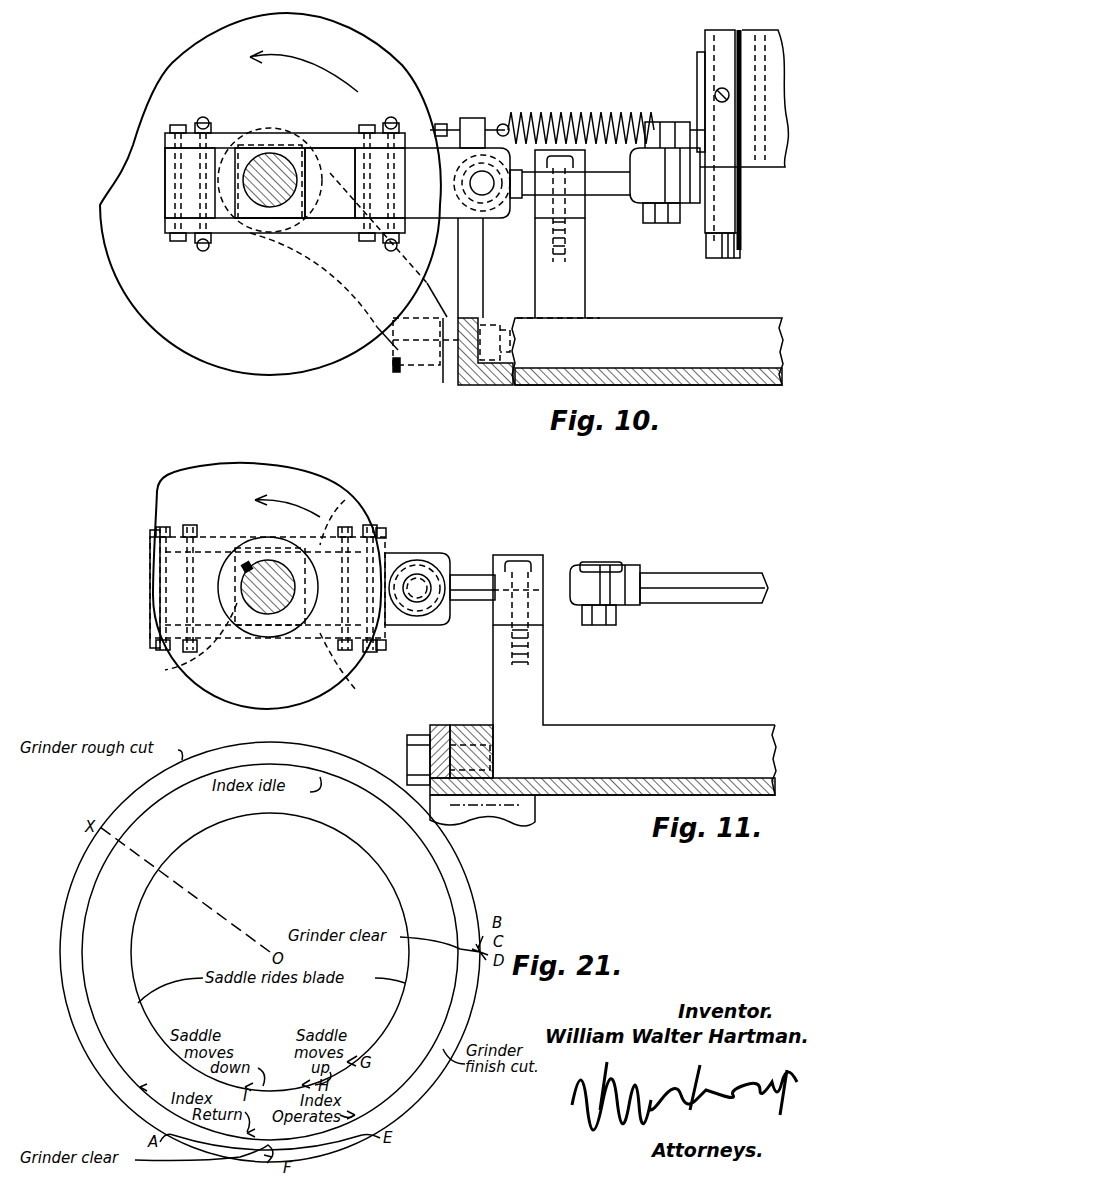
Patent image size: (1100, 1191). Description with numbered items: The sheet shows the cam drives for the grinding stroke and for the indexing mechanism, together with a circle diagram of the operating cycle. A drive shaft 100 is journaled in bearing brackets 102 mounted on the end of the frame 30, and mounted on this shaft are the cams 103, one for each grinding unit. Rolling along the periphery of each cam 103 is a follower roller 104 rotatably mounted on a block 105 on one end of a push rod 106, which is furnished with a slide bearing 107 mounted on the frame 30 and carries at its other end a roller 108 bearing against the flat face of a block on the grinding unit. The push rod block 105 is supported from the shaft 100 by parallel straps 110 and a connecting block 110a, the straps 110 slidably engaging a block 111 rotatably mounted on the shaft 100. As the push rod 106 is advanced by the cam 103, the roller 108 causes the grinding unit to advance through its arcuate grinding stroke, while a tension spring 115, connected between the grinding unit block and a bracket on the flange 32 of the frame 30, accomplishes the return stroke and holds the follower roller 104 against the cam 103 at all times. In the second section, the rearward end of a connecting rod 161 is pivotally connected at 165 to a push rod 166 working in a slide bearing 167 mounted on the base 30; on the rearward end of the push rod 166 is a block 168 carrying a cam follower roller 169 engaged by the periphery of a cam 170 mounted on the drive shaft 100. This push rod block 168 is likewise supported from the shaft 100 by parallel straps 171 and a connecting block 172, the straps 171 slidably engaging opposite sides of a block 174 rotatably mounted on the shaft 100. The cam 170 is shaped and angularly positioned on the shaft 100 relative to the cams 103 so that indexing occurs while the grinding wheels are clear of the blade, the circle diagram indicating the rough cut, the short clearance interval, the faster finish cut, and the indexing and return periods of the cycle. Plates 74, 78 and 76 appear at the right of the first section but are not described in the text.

In FIG. 10, the cam 103 is at (375, 43).
In FIG. 10, the parallel straps 110 is at (323, 140).
In FIG. 10, the drive shaft 100 is at (277, 158).
In FIG. 11, the drive shaft 100 is at (262, 600).
In FIG. 10, the connecting block 110a is at (165, 200).
In FIG. 10, the block 111 is at (247, 220).
In FIG. 10, the bearing brackets 102 is at (377, 351).
In FIG. 10, the flange 32 is at (470, 321).
In FIG. 11, the flange 32 is at (470, 728).
In FIG. 10, the push rod 106 is at (493, 208).
In FIG. 10, the follower roller 104 is at (482, 238).
In FIG. 10, the block 105 is at (470, 245).
In FIG. 10, the slide bearing 107 is at (572, 204).
In FIG. 10, the roller 108 is at (638, 226).
In FIG. 10, the tension spring 115 is at (566, 123).
In FIG. 10, the plate 74 is at (738, 216).
In FIG. 10, the plate 78 is at (771, 178).
In FIG. 10, the plate 76 is at (740, 230).
In FIG. 10, the frame 30 is at (728, 385).
In FIG. 11, the frame 30 is at (580, 785).
In FIG. 11, the cam 170 is at (319, 477).
In FIG. 11, the parallel straps 171 is at (347, 502).
In FIG. 11, the connecting block 172 is at (150, 615).
In FIG. 11, the block 174 is at (184, 665).
In FIG. 11, the block 168 is at (400, 555).
In FIG. 11, the cam follower roller 169 is at (417, 560).
In FIG. 11, the push rod 166 is at (463, 575).
In FIG. 11, the slide bearing 167 is at (537, 557).
In FIG. 11, the pivotal connection 165 is at (614, 565).
In FIG. 11, the connecting rod 161 is at (705, 575).